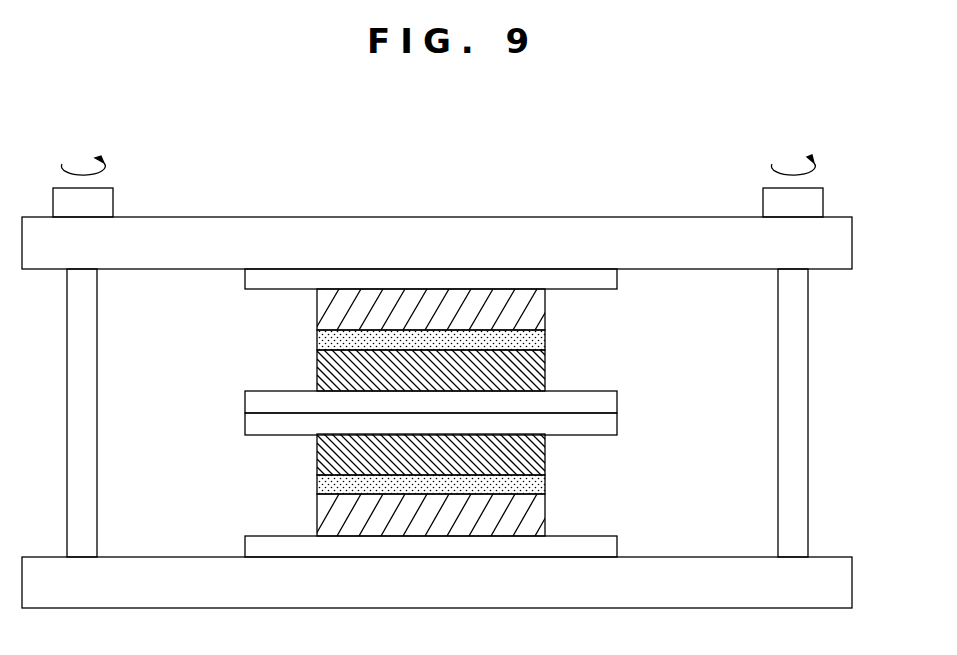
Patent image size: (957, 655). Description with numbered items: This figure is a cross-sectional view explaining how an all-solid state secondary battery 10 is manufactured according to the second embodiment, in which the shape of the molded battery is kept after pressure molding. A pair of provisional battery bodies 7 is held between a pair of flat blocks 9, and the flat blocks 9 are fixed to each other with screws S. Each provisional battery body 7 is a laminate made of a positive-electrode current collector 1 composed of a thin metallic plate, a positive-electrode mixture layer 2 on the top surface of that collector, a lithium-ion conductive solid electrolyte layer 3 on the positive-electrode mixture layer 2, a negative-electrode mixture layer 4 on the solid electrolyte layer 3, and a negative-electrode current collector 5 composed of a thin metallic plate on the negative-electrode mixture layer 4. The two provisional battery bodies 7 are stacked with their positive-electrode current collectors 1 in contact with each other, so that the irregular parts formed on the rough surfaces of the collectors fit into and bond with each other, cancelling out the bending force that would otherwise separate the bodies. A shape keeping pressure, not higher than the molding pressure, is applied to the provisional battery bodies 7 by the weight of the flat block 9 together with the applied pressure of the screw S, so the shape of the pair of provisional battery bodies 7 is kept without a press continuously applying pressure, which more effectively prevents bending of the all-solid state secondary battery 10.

The positive-electrode current collector 1 is at (252, 400).
The positive-electrode mixture layer 2 is at (333, 366).
The solid electrolyte layer 3 is at (333, 338).
The negative-electrode mixture layer 4 is at (333, 310).
The negative-electrode current collector 5 is at (250, 275).
The provisional battery body 7 is at (622, 340).
The flat block 9 is at (838, 252).
The all-solid state secondary battery 10 is at (704, 312).
The screw S is at (105, 203).